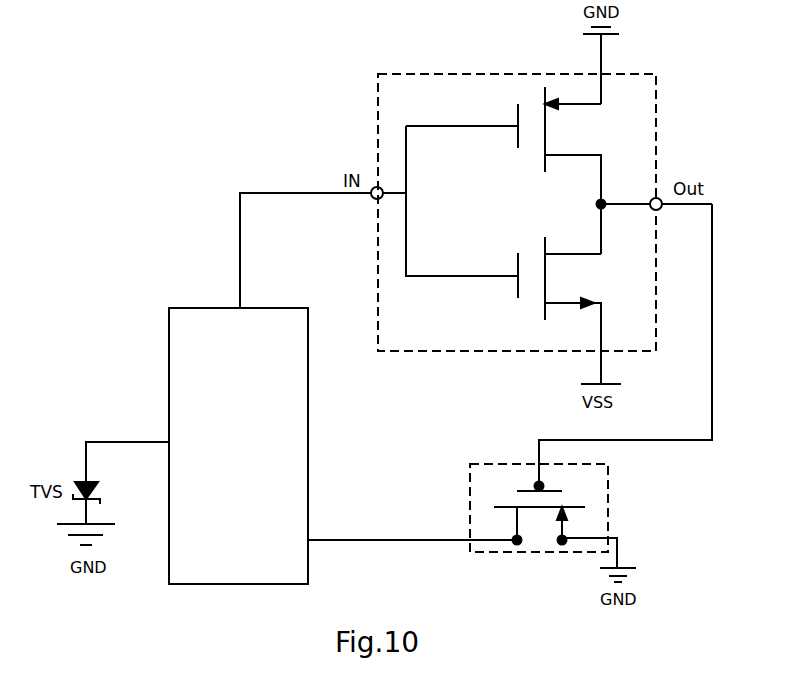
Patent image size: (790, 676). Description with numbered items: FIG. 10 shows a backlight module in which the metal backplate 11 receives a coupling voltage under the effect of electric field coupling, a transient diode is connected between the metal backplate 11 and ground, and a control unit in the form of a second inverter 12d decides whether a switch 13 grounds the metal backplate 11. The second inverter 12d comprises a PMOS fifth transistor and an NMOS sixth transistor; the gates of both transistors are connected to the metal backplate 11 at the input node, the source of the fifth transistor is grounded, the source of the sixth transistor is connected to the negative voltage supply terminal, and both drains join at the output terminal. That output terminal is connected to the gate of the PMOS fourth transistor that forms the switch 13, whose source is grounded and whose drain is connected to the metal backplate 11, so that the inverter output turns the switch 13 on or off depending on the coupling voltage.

The metal backplate 11 is at (238, 446).
The second inverter 12d is at (453, 74).
The switch 13 is at (492, 552).